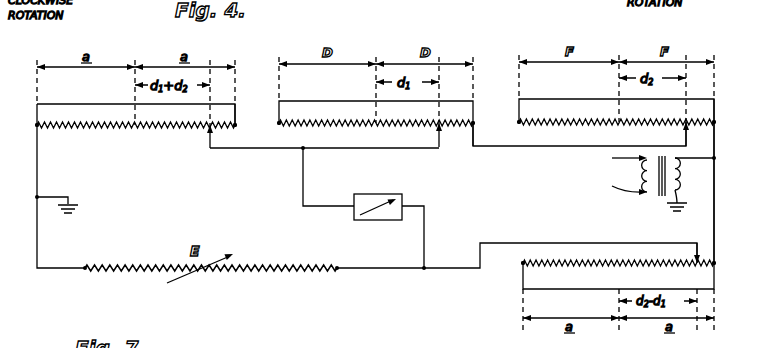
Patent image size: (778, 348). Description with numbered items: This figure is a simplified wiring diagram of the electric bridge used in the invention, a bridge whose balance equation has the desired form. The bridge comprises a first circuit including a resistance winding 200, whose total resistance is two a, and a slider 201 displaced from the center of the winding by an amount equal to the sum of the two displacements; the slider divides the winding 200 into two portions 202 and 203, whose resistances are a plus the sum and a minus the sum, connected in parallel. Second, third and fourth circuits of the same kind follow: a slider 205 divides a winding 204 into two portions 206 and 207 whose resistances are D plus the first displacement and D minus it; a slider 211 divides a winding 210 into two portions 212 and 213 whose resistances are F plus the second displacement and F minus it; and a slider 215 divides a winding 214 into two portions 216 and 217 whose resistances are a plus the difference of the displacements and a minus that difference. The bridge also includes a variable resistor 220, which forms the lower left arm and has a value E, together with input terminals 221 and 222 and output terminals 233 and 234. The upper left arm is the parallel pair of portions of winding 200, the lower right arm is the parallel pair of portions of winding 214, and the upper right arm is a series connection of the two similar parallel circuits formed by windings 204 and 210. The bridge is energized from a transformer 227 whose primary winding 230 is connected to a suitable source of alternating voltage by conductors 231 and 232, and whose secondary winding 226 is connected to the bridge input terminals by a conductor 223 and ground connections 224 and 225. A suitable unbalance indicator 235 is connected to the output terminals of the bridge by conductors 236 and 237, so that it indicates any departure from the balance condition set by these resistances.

The resistance winding 200 is at (158, 133).
The slider 201 is at (208, 131).
The portion of winding 200 202 is at (55, 137).
The portion of winding 200 203 is at (227, 127).
The winding 204 is at (383, 136).
The slider 205 is at (437, 138).
The portion of winding 204 206 is at (363, 126).
The portion of winding 204 207 is at (467, 147).
The winding 210 is at (575, 133).
The slider 211 is at (691, 137).
The portion of winding 210 212 is at (651, 124).
The portion of winding 210 213 is at (707, 124).
The winding 214 is at (569, 268).
The slider 215 is at (699, 252).
The portion of winding 214 216 is at (572, 262).
The portion of winding 214 217 is at (712, 262).
The variable resistor 220 is at (256, 272).
The input terminal 221 is at (716, 159).
The input terminal 222 is at (40, 196).
The conductor 223 is at (697, 158).
The ground connection 224 is at (72, 204).
The ground connection 225 is at (690, 205).
The secondary winding 226 is at (681, 183).
The transformer 227 is at (656, 203).
The primary winding 230 is at (645, 192).
The conductor 231 is at (612, 186).
The conductor 232 is at (614, 158).
The output terminal 233 is at (301, 152).
The output terminal 234 is at (427, 266).
The unbalance indicator 235 is at (372, 198).
The conductor 236 is at (305, 196).
The conductor 237 is at (427, 224).